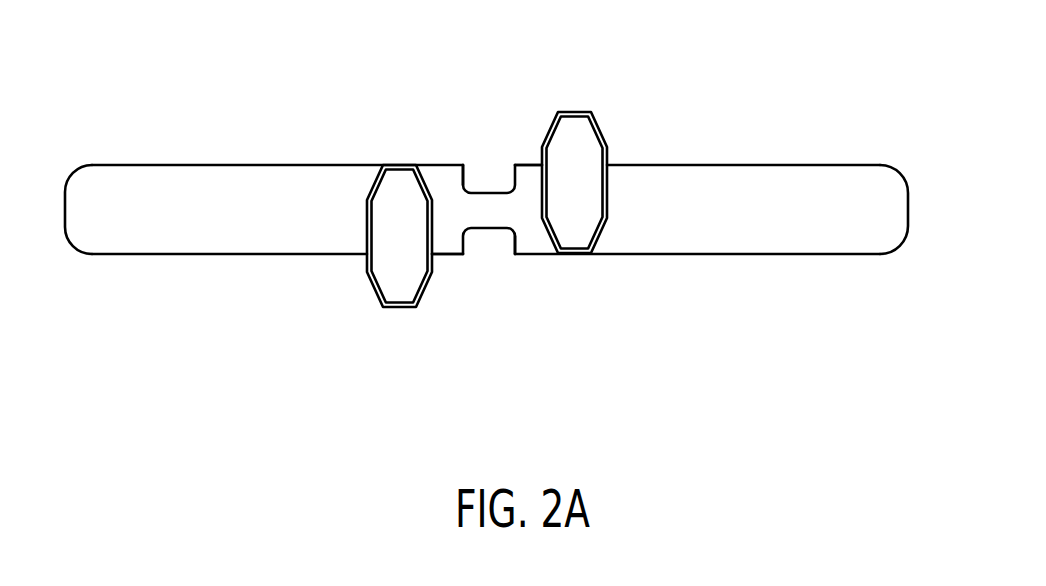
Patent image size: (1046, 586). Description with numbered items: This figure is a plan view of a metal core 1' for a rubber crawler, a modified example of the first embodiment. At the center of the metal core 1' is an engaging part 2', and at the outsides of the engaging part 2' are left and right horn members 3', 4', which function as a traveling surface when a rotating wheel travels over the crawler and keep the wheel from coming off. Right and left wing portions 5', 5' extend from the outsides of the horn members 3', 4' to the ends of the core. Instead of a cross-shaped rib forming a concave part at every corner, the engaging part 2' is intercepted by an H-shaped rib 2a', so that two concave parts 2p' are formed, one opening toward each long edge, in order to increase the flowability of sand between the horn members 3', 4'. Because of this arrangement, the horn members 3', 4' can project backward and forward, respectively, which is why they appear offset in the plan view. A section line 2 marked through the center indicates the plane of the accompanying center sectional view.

The metal core 1' is at (486, 135).
The section line 2- 2 is at (472, 204).
The engaging part 2' is at (486, 244).
The H-shaped rib 2a' is at (479, 229).
The concave part 2p' is at (504, 232).
The left horn member 3' is at (399, 195).
The right horn member 4' is at (578, 145).
The wing portion 5' is at (486, 251).